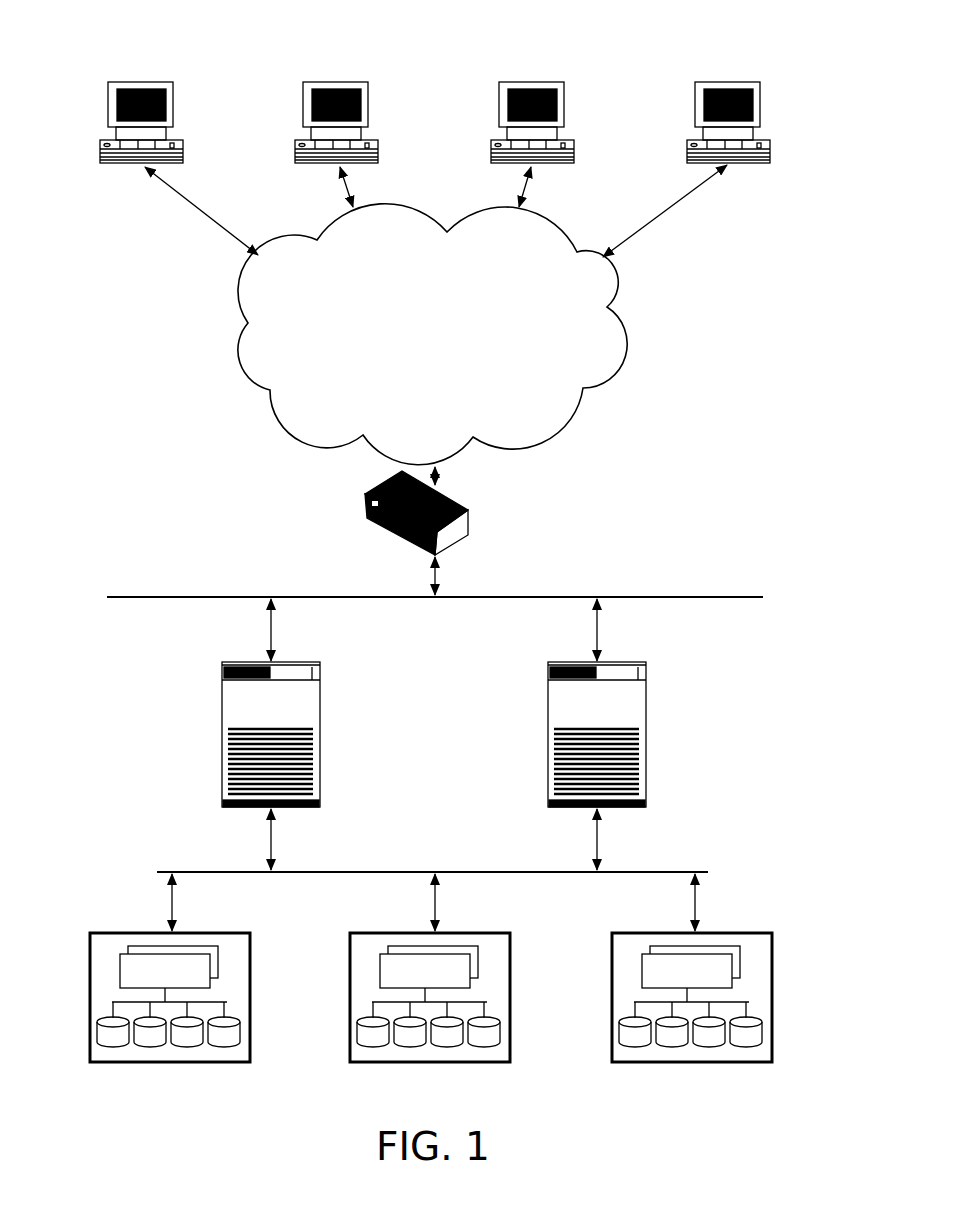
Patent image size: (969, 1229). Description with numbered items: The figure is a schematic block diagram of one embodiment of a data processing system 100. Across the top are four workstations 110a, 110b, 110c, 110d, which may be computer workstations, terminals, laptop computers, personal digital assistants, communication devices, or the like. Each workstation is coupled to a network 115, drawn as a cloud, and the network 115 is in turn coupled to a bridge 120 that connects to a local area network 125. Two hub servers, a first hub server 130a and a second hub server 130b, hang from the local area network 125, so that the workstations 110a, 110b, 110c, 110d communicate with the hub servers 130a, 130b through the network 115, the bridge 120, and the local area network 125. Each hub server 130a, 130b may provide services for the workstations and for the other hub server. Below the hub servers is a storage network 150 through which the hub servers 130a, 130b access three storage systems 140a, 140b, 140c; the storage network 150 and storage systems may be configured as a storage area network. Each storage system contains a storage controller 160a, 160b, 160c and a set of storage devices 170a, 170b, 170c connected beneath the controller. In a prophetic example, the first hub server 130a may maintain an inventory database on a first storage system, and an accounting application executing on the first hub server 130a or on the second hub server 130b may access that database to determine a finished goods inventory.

The data processing system 100 is at (105, 60).
The workstation 110a is at (173, 83).
The workstation 110b is at (368, 83).
The workstation 110c is at (564, 83).
The workstation 110d is at (760, 83).
The network 115 is at (411, 357).
The bridge 120 is at (470, 512).
The local area network 125 is at (128, 596).
The first hub server 130a is at (320, 661).
The second hub server 130b is at (646, 661).
The storage network 150 is at (372, 870).
The storage system 140a is at (169, 978).
The storage system 140b is at (430, 978).
The storage system 140c is at (691, 978).
The storage controller 160a is at (120, 966).
The storage controller 160b is at (380, 966).
The storage controller 160c is at (642, 966).
The storage device 170a is at (98, 1033).
The storage device 170b is at (358, 1033).
The storage device 170c is at (620, 1033).